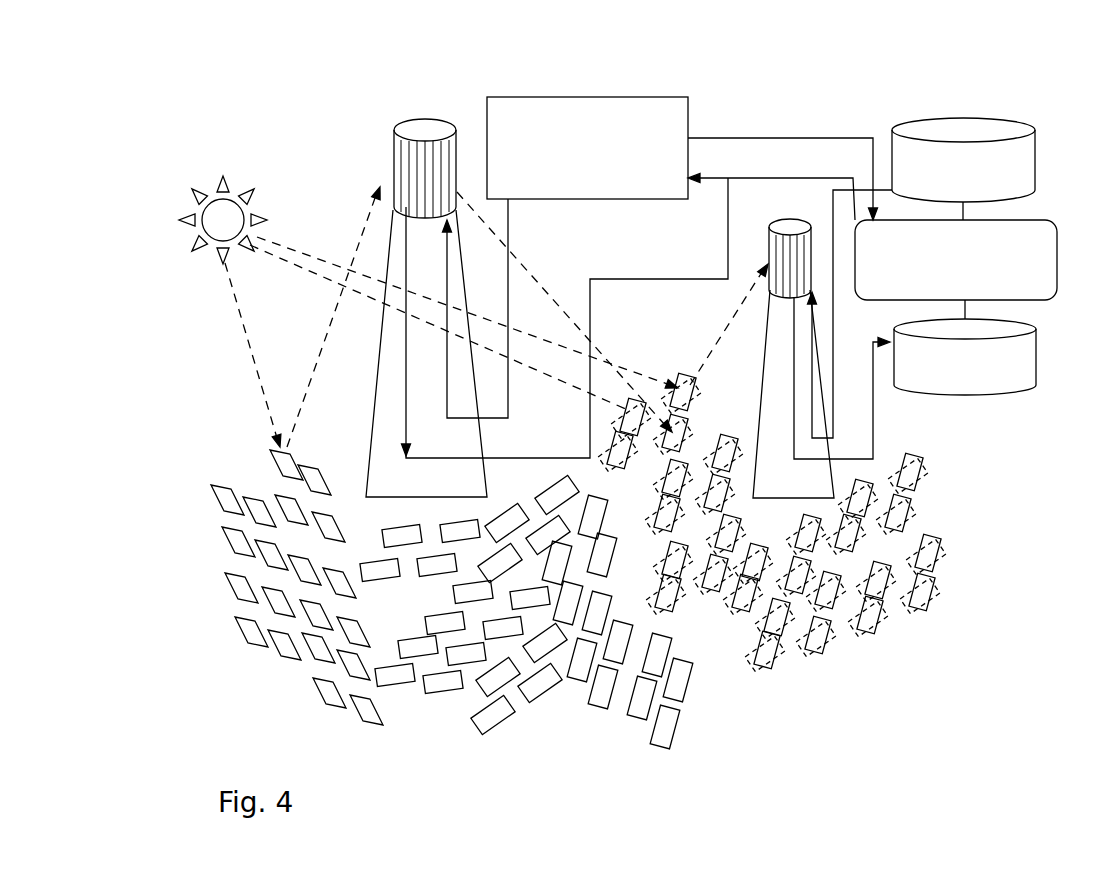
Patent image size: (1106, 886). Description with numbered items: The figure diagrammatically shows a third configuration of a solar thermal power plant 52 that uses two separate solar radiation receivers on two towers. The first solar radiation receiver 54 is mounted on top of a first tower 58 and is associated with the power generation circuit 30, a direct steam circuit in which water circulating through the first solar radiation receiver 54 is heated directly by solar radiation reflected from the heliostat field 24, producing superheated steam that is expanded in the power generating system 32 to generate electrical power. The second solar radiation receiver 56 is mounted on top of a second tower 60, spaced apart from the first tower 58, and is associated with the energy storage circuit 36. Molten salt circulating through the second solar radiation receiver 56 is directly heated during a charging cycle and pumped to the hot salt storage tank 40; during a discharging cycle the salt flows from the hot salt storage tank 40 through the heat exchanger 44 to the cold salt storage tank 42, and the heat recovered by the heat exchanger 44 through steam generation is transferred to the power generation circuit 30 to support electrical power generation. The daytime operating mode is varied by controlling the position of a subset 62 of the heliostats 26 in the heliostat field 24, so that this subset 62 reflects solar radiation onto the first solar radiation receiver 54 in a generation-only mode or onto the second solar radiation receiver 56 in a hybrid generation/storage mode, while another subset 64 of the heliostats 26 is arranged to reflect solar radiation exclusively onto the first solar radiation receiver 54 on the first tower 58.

The heliostat field 24 is at (626, 758).
The heliostats 26 is at (813, 647).
The power generation circuit 30 is at (630, 263).
The power generating system 32 is at (573, 163).
The energy storage circuit 36 is at (891, 407).
The hot salt storage tank 40 is at (950, 383).
The cold salt storage tank 42 is at (948, 183).
The heat exchanger 44 is at (941, 273).
The solar thermal power plant 52 is at (857, 76).
The first solar radiation receiver 54 is at (372, 118).
The second solar radiation receiver 56 is at (789, 190).
The first tower 58 is at (387, 265).
The second tower 60 is at (833, 473).
The subset of heliostats 62 is at (936, 628).
The subset of heliostats 64 is at (429, 712).